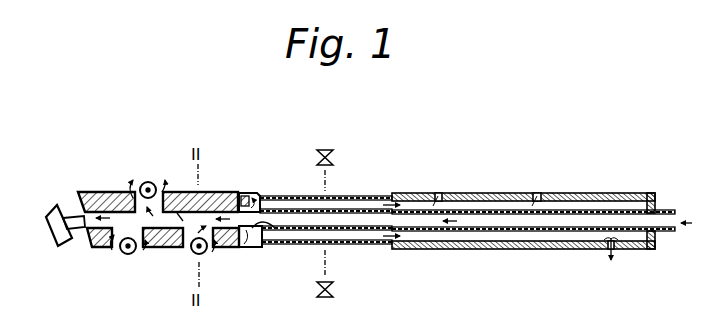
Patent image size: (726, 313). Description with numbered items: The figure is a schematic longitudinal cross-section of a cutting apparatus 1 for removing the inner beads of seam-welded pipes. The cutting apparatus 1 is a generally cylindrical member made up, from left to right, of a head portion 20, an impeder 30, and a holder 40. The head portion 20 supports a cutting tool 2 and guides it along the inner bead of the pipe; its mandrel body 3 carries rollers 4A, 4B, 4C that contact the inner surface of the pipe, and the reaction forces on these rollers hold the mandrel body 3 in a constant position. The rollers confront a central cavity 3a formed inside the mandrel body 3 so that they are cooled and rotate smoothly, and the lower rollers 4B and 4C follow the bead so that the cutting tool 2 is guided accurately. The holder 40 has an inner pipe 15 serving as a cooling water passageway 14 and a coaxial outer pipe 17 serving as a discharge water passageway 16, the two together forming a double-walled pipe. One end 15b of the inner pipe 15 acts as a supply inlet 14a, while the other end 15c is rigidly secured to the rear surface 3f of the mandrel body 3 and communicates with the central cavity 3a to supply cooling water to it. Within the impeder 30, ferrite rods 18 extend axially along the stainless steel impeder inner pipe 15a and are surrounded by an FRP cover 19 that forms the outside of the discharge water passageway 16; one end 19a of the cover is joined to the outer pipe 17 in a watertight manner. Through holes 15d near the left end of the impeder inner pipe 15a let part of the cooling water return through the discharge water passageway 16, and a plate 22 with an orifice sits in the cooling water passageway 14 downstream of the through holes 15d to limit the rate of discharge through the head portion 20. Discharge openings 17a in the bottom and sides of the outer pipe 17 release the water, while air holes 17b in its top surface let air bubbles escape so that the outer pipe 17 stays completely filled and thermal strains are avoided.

The cutting apparatus 1 is at (508, 182).
The cutting tool 2 is at (60, 246).
The mandrel body 3 is at (211, 192).
The central cavity 3a is at (172, 192).
The rear surface 3f is at (242, 193).
The roller 4A is at (141, 182).
The roller 4B is at (127, 255).
The roller 4C is at (192, 255).
The cooling water passageway 14 is at (499, 218).
The supply inlet 14a is at (667, 212).
The inner pipe 15 is at (437, 232).
The impeder inner pipe 15a is at (356, 244).
The end of inner pipe 15b is at (668, 232).
The end of inner pipe 15c is at (250, 247).
The through holes 15d is at (262, 233).
The discharge water passageway 16 is at (550, 243).
The outer pipe 17 is at (608, 193).
The discharge openings 17a is at (618, 253).
The air holes 17b is at (438, 195).
The ferrite rods 18 is at (288, 205).
The FRP cover 19 is at (334, 195).
The end of FRP cover 19a is at (388, 192).
The head portion 20 is at (260, 195).
The plate 22 is at (228, 248).
The impeder 30 is at (388, 190).
The holder 40 is at (655, 200).